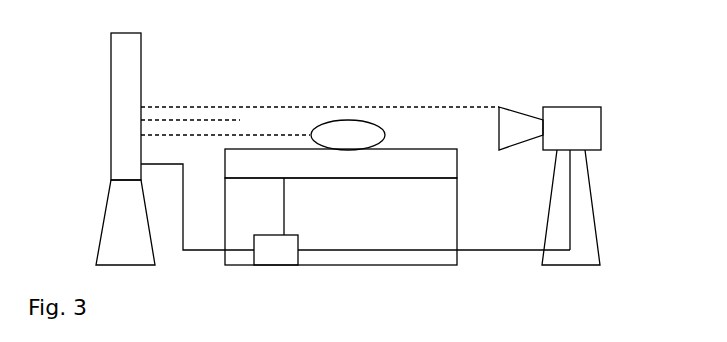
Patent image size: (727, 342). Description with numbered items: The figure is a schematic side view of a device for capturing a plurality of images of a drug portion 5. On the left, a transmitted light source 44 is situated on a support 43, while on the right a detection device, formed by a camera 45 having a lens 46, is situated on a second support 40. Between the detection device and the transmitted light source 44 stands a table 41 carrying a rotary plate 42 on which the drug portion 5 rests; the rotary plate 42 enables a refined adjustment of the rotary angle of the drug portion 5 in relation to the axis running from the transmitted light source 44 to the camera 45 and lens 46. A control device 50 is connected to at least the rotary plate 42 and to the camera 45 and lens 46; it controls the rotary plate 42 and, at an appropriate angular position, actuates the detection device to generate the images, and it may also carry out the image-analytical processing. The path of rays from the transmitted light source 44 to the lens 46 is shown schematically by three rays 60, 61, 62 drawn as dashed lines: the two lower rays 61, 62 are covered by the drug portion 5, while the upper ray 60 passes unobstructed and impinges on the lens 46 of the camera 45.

The drug portion 5 is at (348, 135).
The support 40 is at (586, 250).
The table 41 is at (427, 236).
The rotary plate 42 is at (312, 163).
The support 43 is at (125, 250).
The transmitted light source 44 is at (125, 49).
The camera 45 is at (572, 128).
The lens 46 is at (520, 128).
The control device 50 is at (272, 252).
The ray 60 is at (212, 107).
The ray 61 is at (240, 120).
The ray 62 is at (268, 135).